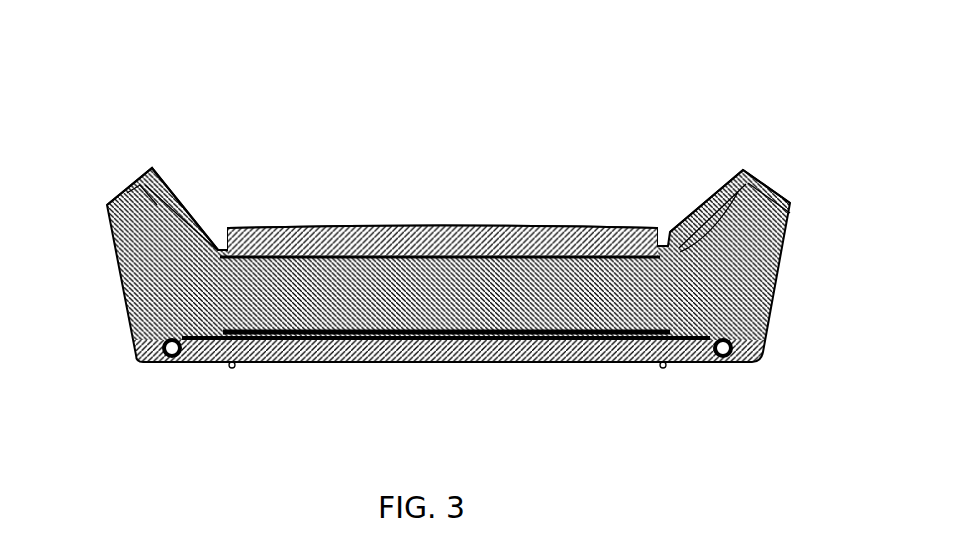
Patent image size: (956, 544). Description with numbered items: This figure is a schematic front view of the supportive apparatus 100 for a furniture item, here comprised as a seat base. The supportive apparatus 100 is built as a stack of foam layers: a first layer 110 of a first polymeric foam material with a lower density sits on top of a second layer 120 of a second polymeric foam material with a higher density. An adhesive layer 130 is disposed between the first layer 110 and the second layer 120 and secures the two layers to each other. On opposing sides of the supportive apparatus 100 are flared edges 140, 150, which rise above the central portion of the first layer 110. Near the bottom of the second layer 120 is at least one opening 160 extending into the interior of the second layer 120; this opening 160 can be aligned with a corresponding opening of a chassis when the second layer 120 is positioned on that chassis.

The supportive apparatus 100 is at (450, 210).
The first layer 110 is at (424, 247).
The second layer 120 is at (155, 296).
The adhesive layer 130 is at (660, 257).
The flared edge 140 is at (175, 206).
The flared edge 150 is at (752, 168).
The opening 160 is at (583, 348).